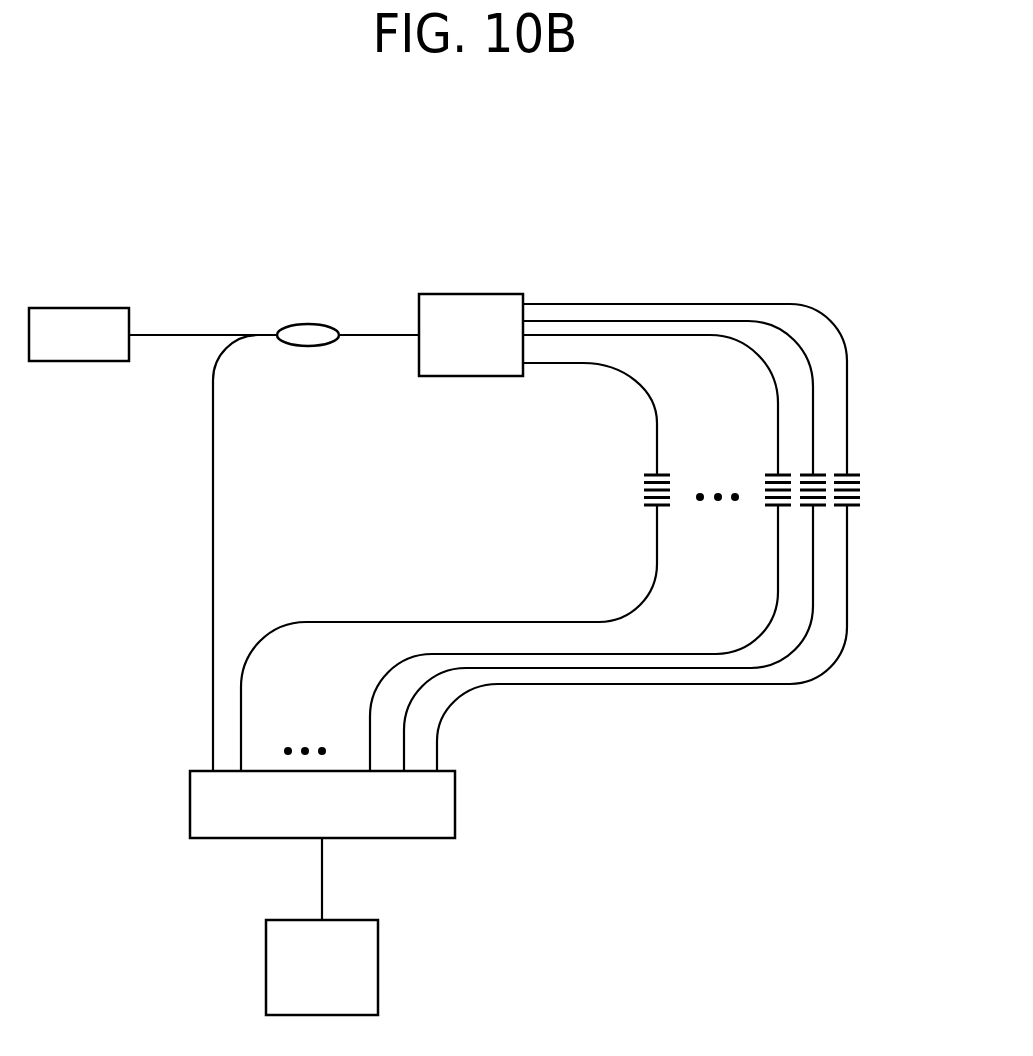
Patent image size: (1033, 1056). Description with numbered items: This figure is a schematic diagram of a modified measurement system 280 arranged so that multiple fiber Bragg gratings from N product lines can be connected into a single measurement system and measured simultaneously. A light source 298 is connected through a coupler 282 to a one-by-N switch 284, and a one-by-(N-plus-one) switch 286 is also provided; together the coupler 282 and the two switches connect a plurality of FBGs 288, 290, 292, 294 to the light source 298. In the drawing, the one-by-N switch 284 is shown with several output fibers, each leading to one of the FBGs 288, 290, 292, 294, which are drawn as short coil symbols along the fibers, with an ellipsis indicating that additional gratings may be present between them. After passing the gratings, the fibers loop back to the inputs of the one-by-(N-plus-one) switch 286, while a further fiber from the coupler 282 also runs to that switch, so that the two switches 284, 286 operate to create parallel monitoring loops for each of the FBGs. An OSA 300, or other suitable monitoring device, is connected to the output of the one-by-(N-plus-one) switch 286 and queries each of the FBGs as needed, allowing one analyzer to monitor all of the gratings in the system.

The measurement system 280 is at (453, 204).
The coupler 282 is at (307, 324).
The 1×N switch 284 is at (470, 294).
The 1×(N+1) switch 286 is at (455, 800).
The FBG 288 is at (854, 474).
The FBG 290 is at (817, 508).
The FBG 292 is at (773, 508).
The FBG 294 is at (643, 499).
The light source 298 is at (80, 308).
The OSA 300 is at (378, 963).